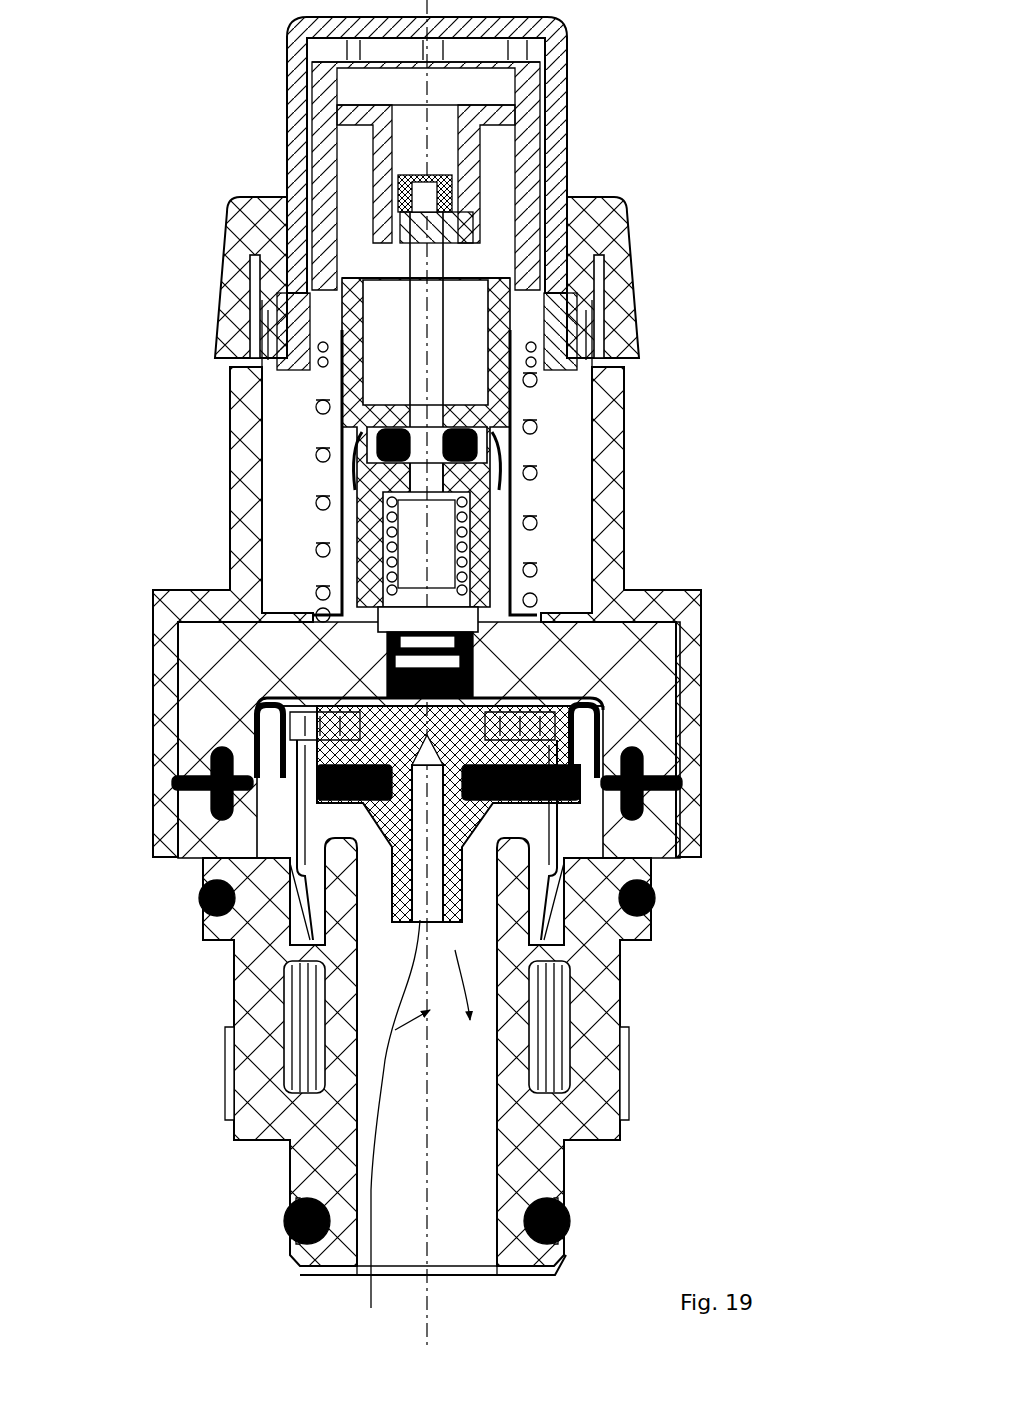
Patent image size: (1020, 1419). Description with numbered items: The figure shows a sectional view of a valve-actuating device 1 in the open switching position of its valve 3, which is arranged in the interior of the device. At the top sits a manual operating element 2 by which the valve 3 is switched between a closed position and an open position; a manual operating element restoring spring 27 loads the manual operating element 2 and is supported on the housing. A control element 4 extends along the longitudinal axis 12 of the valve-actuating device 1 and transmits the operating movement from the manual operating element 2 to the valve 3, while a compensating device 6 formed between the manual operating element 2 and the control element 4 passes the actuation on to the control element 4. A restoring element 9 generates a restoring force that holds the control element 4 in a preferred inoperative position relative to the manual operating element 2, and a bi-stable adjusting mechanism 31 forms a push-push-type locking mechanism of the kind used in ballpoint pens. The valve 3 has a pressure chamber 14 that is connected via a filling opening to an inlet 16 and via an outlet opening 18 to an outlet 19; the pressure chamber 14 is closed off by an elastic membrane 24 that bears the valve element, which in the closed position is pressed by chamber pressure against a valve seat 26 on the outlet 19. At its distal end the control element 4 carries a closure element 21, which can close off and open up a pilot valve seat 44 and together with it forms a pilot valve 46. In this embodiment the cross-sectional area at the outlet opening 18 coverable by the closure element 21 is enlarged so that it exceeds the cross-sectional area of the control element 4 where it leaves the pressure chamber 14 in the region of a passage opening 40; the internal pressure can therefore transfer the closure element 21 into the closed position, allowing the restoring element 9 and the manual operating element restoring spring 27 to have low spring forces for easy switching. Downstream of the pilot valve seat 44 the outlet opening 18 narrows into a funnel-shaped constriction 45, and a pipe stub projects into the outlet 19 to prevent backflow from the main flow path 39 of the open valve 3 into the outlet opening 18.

The valve-actuating device 1 is at (740, 160).
The manual operating element 2 is at (567, 125).
The valve 3 is at (715, 740).
The control element 4 is at (330, 318).
The compensating device 6 is at (480, 203).
The restoring element 9 is at (300, 580).
The longitudinal axis 12 is at (436, 1311).
The pressure chamber 14 is at (273, 712).
The inlet 16 is at (273, 848).
The outlet opening 18 is at (278, 775).
The outlet 19 is at (300, 1028).
The closure element 21 is at (335, 553).
The membrane 24 is at (605, 725).
The valve seat 26 is at (520, 860).
The manual operating element restoring spring 27 is at (532, 532).
The bi-stable adjusting mechanism 31 is at (637, 318).
The main flow path 39 is at (600, 968).
The passage opening 40 is at (470, 491).
The pilot valve seat 44 is at (520, 698).
The constriction 45 is at (414, 1129).
The pilot valve 46 is at (335, 690).